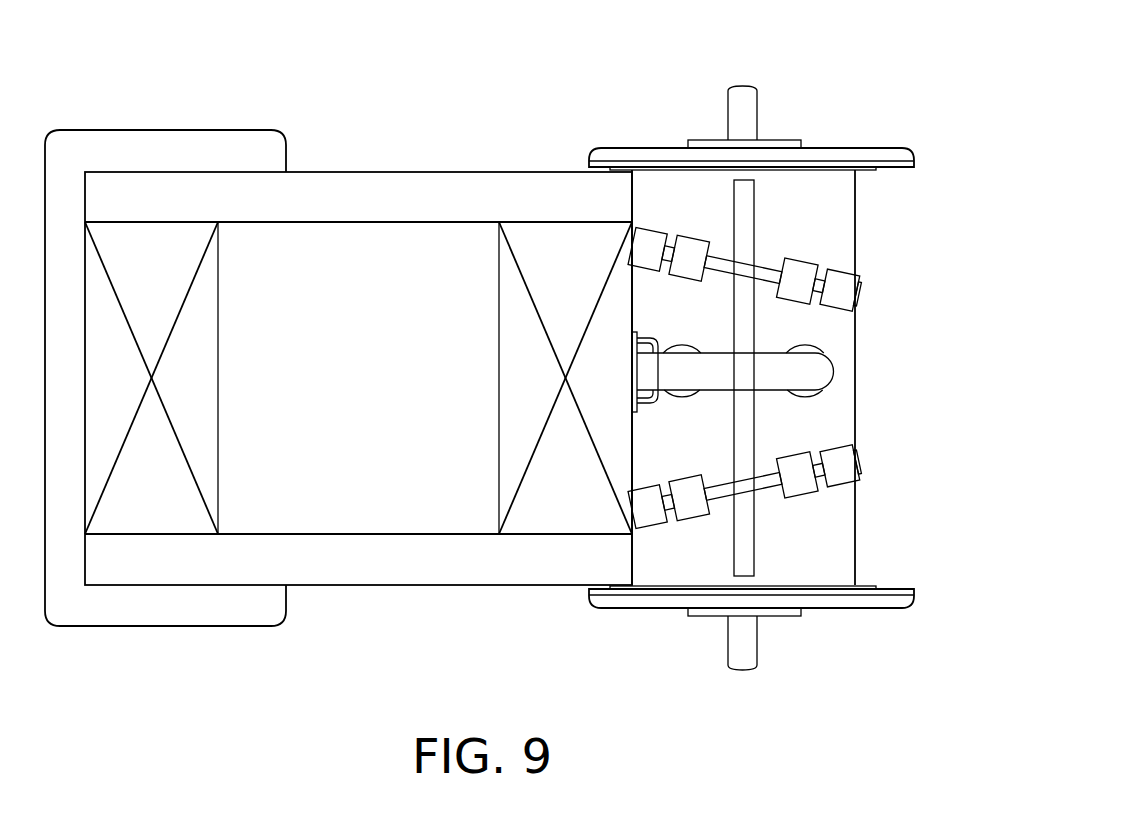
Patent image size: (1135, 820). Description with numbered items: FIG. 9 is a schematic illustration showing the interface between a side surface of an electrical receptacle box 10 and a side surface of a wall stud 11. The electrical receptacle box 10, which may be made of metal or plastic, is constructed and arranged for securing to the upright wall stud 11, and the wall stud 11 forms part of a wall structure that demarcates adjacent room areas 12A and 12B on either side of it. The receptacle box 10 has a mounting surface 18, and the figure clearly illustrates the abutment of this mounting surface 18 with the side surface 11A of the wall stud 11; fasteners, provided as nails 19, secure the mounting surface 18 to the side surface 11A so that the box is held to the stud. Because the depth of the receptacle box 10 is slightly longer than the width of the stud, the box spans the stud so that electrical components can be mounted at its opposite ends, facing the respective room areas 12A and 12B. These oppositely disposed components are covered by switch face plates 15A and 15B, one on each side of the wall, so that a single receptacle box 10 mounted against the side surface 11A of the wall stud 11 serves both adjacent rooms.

The electrical receptacle box 10 is at (860, 370).
The wall stud 11 is at (496, 320).
The side surface of the wall stud 11A is at (632, 462).
The room area 12A is at (810, 683).
The room area 12B is at (817, 87).
The switch face plate 15A is at (630, 610).
The switch face plate 15B is at (838, 148).
The mounting surface 18 is at (630, 296).
The nails 19 is at (762, 270).